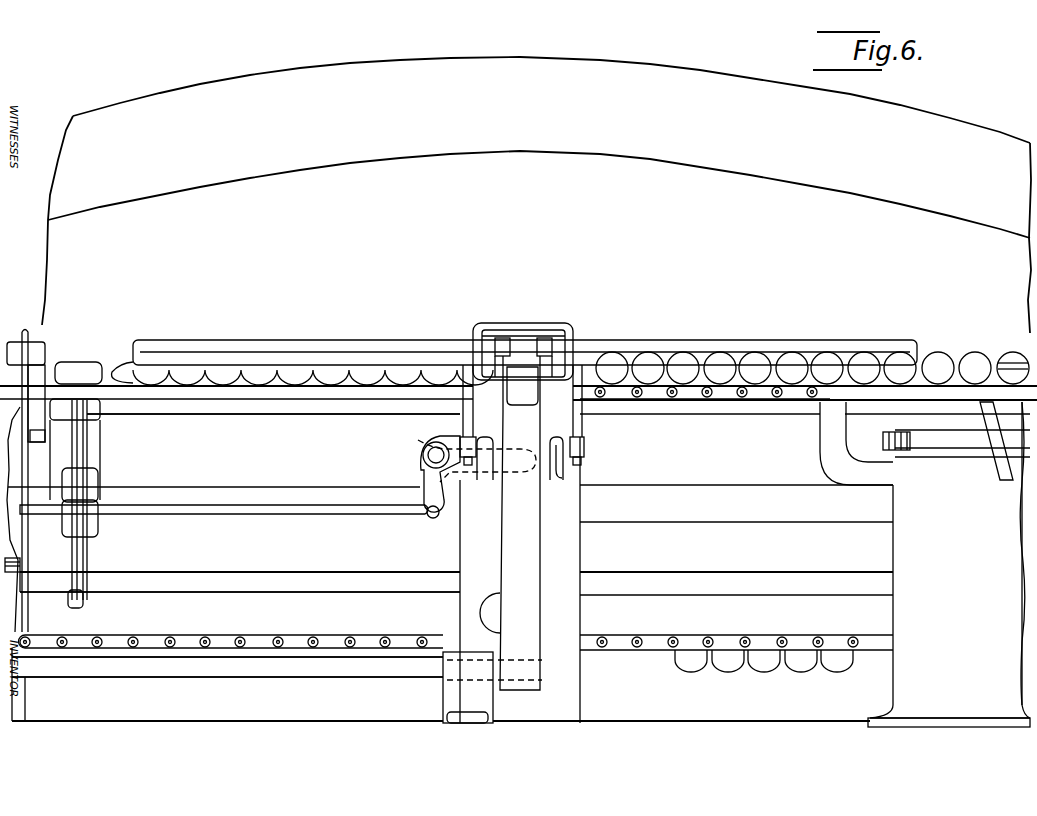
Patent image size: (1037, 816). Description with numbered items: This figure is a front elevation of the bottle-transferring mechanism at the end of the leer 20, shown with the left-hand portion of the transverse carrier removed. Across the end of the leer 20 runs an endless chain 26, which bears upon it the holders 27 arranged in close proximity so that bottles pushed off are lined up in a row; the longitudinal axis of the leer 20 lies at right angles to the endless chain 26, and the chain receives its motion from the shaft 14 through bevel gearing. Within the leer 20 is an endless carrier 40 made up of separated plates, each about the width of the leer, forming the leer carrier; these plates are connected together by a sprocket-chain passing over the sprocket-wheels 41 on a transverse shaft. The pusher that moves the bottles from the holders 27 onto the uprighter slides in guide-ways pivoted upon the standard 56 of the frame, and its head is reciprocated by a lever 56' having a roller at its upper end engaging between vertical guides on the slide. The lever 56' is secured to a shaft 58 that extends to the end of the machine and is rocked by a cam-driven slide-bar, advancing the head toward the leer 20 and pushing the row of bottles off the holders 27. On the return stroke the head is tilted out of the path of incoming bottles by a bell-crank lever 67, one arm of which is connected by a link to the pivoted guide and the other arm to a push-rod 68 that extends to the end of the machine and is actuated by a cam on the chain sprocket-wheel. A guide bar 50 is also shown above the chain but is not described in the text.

The leer 20 is at (536, 195).
The guide bar 50 is at (130, 370).
The holders 27 is at (770, 384).
The endless chain 26 is at (750, 402).
The sprocket-wheels 41 is at (88, 452).
The endless carrier 40 is at (306, 414).
The bell-crank lever 67 is at (420, 485).
The push-rod 68 is at (273, 515).
The shaft 14 is at (326, 572).
The standard 56 is at (535, 523).
The lever 56' is at (541, 523).
The shaft 58 is at (258, 670).